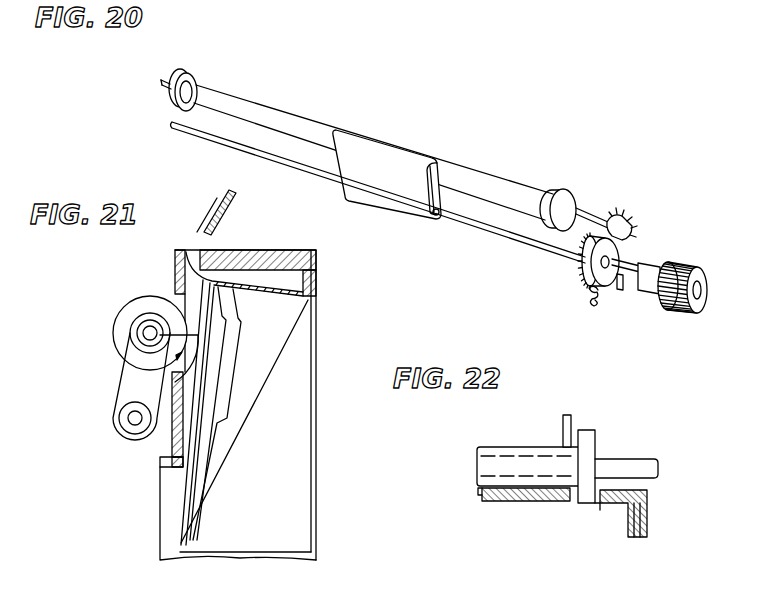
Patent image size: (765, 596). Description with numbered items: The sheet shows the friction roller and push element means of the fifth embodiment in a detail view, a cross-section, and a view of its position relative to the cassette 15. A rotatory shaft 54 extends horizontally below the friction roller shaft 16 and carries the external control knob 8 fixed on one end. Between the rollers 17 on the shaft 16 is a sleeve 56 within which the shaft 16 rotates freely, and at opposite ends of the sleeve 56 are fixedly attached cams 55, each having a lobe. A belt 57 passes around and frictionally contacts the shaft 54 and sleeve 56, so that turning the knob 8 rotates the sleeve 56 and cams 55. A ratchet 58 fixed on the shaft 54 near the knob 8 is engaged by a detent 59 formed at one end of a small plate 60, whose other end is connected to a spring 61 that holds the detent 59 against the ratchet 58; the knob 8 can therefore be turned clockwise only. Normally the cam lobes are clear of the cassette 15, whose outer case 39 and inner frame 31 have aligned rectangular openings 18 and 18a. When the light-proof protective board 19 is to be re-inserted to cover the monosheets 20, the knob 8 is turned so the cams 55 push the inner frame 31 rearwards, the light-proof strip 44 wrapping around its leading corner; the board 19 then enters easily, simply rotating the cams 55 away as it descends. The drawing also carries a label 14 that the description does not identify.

In FIG. 20, the external control knob 8 is at (699, 290).
In FIG. 20, the bevel gear pair 14 is at (632, 230).
In FIG. 21, the cassette 15 is at (282, 537).
In FIG. 20, the friction roller shaft 16 is at (595, 219).
In FIG. 21, the friction roller shaft 16 is at (143, 334).
In FIG. 22, the friction roller shaft 16 is at (644, 464).
In FIG. 21, the friction rollers 17 is at (131, 306).
In FIG. 22, the friction rollers 17 is at (592, 446).
In FIG. 22, the rectangular openings 18 is at (565, 495).
In FIG. 22, the rectangular openings 18a is at (596, 503).
In FIG. 21, the light-proof protective board 19 is at (233, 215).
In FIG. 21, the monosheet 20 is at (208, 498).
In FIG. 22, the inner frame 31 is at (515, 502).
In FIG. 22, the outer case 39 is at (481, 493).
In FIG. 21, the light-proof flexible strip 44 is at (238, 282).
In FIG. 20, the rotatory shaft 54 is at (517, 239).
In FIG. 21, the rotatory shaft 54 is at (135, 424).
In FIG. 20, the cams 55 is at (188, 108).
In FIG. 21, the cams 55 is at (176, 360).
In FIG. 22, the cams 55 is at (570, 422).
In FIG. 20, the sleeve 56 is at (276, 120).
In FIG. 21, the sleeve 56 is at (150, 318).
In FIG. 22, the sleeve 56 is at (515, 447).
In FIG. 20, the belt 57 is at (373, 152).
In FIG. 21, the belt 57 is at (123, 378).
In FIG. 20, the ratchet 58 is at (590, 267).
In FIG. 20, the detent 59 is at (621, 225).
In FIG. 20, the small plate 60 is at (627, 284).
In FIG. 20, the spring 61 is at (604, 302).